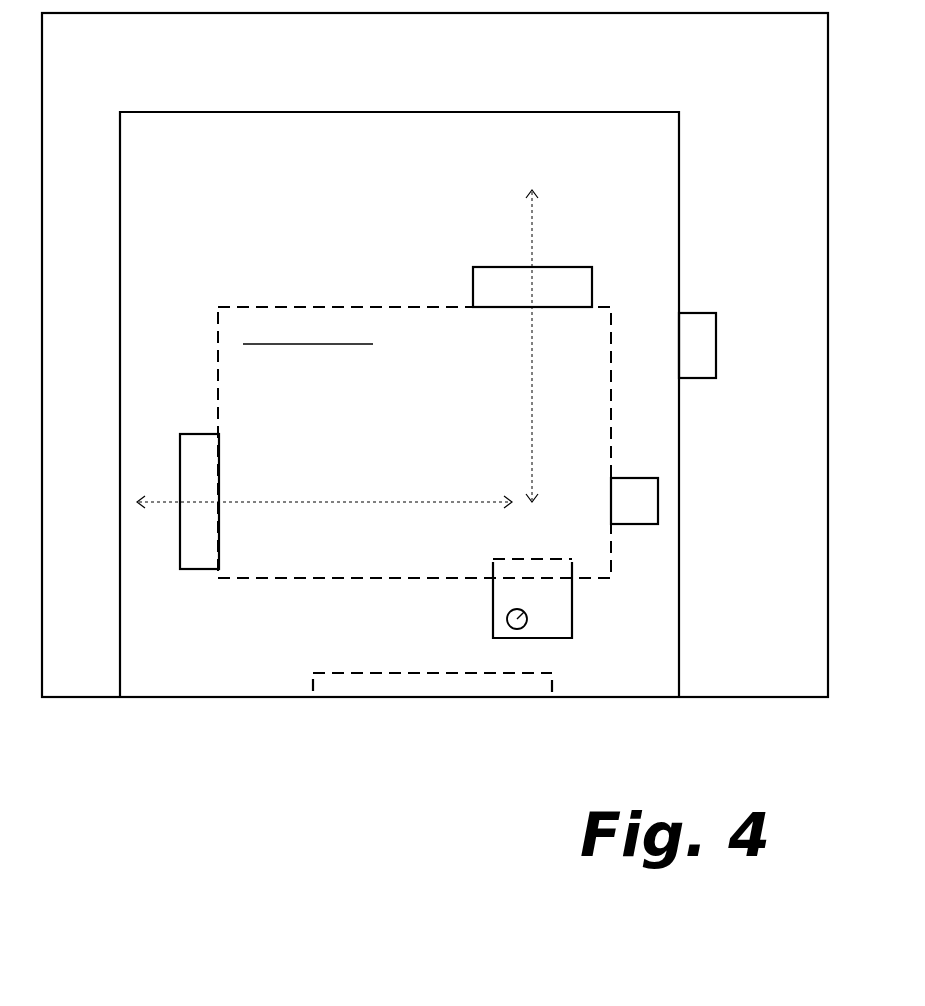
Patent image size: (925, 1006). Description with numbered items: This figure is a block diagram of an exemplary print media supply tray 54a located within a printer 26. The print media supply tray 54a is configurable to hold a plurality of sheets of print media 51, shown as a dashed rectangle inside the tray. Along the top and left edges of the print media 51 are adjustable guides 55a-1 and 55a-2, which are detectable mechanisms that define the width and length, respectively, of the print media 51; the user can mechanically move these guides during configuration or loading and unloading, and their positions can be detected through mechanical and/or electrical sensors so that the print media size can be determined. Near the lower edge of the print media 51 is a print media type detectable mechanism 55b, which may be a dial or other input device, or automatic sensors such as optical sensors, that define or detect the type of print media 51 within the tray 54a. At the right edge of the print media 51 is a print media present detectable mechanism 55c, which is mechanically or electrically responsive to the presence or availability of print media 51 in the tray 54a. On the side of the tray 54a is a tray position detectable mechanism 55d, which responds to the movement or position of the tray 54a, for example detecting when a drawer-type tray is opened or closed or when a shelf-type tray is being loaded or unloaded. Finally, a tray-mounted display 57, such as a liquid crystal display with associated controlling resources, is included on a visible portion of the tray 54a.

The printer 26 is at (137, 59).
The print media supply tray 54a is at (269, 179).
The print media 51 is at (384, 307).
The adjustable guide 55a-1 is at (541, 278).
The adjustable guide 55a-2 is at (189, 560).
The print media type detectable mechanism 55b is at (548, 609).
The print media present detectable mechanism 55c is at (630, 492).
The tray position detectable mechanism 55d is at (697, 345).
The tray-mounted display 57 is at (425, 682).